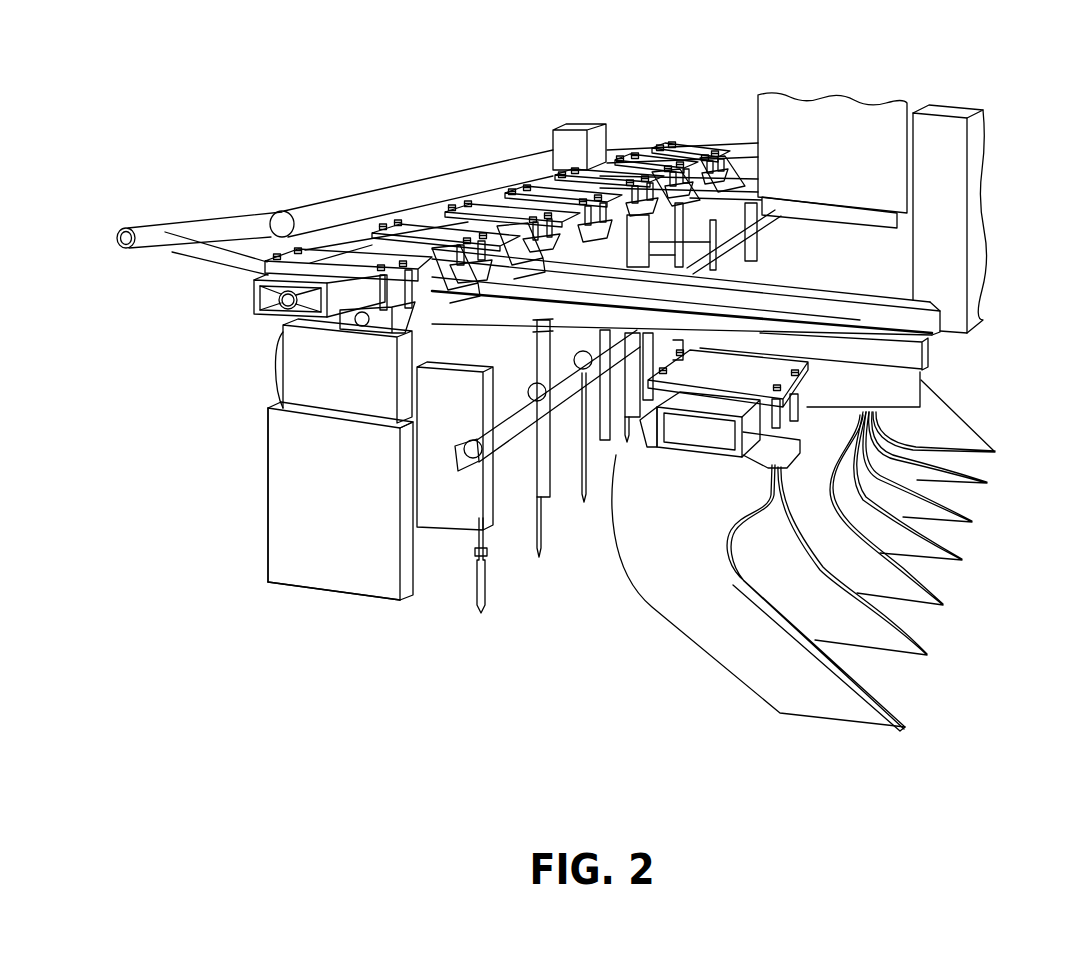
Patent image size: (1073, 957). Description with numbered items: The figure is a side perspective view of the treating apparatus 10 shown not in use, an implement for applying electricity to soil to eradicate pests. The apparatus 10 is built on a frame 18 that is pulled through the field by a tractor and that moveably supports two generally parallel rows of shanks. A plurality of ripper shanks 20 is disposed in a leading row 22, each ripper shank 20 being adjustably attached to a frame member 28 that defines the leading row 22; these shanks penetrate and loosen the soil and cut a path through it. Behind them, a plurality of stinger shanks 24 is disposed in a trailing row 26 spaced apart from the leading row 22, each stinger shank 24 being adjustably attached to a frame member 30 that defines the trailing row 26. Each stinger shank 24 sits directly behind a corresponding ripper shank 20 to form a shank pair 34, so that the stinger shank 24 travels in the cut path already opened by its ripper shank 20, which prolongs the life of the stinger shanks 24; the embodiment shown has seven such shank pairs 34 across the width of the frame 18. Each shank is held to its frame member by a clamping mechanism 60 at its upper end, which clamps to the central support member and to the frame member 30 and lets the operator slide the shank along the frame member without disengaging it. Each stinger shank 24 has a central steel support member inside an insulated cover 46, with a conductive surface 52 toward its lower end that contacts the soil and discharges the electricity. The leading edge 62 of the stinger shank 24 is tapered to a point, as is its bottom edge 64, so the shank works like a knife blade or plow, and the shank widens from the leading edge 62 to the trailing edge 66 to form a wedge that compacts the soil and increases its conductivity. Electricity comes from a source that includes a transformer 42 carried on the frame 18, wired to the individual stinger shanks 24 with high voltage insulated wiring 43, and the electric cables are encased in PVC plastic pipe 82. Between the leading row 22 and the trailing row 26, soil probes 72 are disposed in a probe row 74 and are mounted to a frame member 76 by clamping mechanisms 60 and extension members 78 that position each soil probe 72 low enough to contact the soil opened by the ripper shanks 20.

The treating apparatus 10 is at (541, 124).
The frame 18 is at (872, 316).
The ripper shanks 20 is at (688, 587).
The leading row 22 is at (723, 696).
The stinger shanks 24 is at (297, 532).
The trailing row 26 is at (297, 501).
The frame member 28 is at (707, 404).
The frame member 30 is at (268, 297).
The shank pair 34 is at (524, 561).
The transformer 42 is at (831, 127).
The insulated wiring 43 is at (283, 343).
The insulated cover 46 is at (319, 376).
The conductive surface 52 is at (328, 572).
The clamping mechanism 60 is at (364, 272).
The leading edge 62 is at (405, 600).
The bottom edge 64 is at (288, 588).
The trailing edge 66 is at (268, 540).
The soil probes 72 is at (485, 593).
The probe row 74 is at (479, 621).
The frame member 76 is at (508, 433).
The extension member 78 is at (480, 552).
The PVC plastic pipe 82 is at (460, 185).